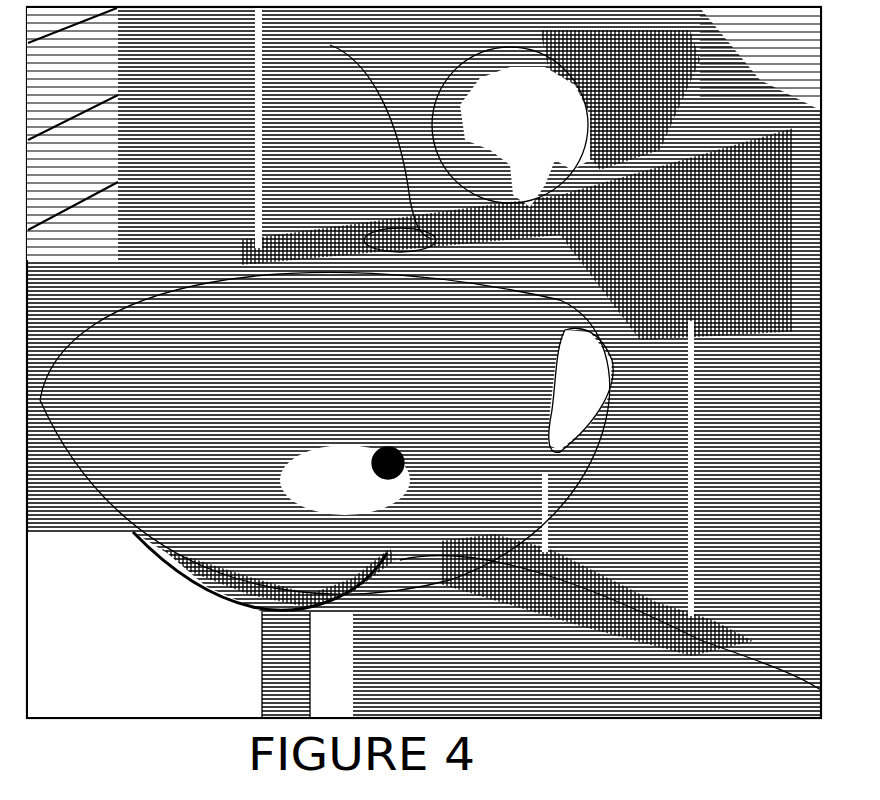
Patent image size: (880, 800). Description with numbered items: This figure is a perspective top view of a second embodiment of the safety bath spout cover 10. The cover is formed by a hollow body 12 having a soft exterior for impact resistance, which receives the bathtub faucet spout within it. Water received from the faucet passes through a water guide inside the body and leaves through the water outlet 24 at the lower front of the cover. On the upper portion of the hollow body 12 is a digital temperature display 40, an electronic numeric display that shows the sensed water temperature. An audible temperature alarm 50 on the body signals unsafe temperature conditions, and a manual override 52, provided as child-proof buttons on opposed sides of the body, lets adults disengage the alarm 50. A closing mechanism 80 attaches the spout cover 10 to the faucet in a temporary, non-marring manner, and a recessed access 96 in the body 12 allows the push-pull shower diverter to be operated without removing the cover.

The safety bath spout cover 10 is at (212, 178).
The hollow body 12 is at (444, 388).
The water outlet 24 is at (385, 590).
The digital temperature display 40 is at (482, 128).
The audible temperature alarm 50 is at (450, 560).
The manual override button 52 is at (373, 460).
The closing mechanism 80 is at (634, 374).
The recessed access 96 is at (395, 237).